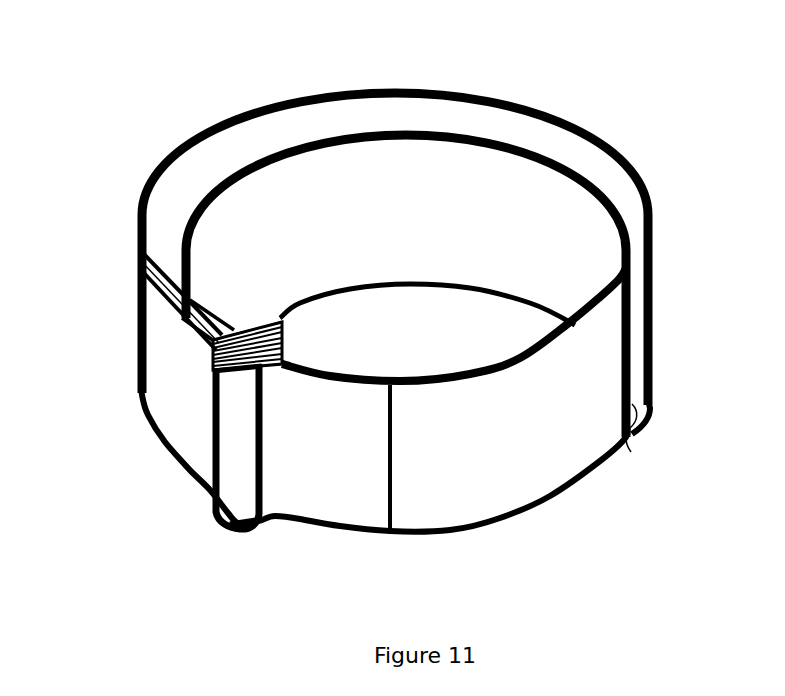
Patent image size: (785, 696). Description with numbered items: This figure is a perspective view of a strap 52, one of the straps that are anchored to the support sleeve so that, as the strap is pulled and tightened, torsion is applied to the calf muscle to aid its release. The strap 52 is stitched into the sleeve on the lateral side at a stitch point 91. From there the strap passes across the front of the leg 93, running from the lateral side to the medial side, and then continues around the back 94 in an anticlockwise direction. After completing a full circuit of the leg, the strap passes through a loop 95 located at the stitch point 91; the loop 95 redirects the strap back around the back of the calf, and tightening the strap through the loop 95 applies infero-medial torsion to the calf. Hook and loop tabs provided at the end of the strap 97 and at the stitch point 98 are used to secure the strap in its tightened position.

The strap 52 is at (161, 106).
The stitch point 91 is at (283, 520).
The front of the leg 93 is at (512, 503).
The back 94 is at (400, 258).
The loop 95 is at (247, 530).
The end of the strap 97 is at (631, 449).
The stitch point 98 is at (365, 518).